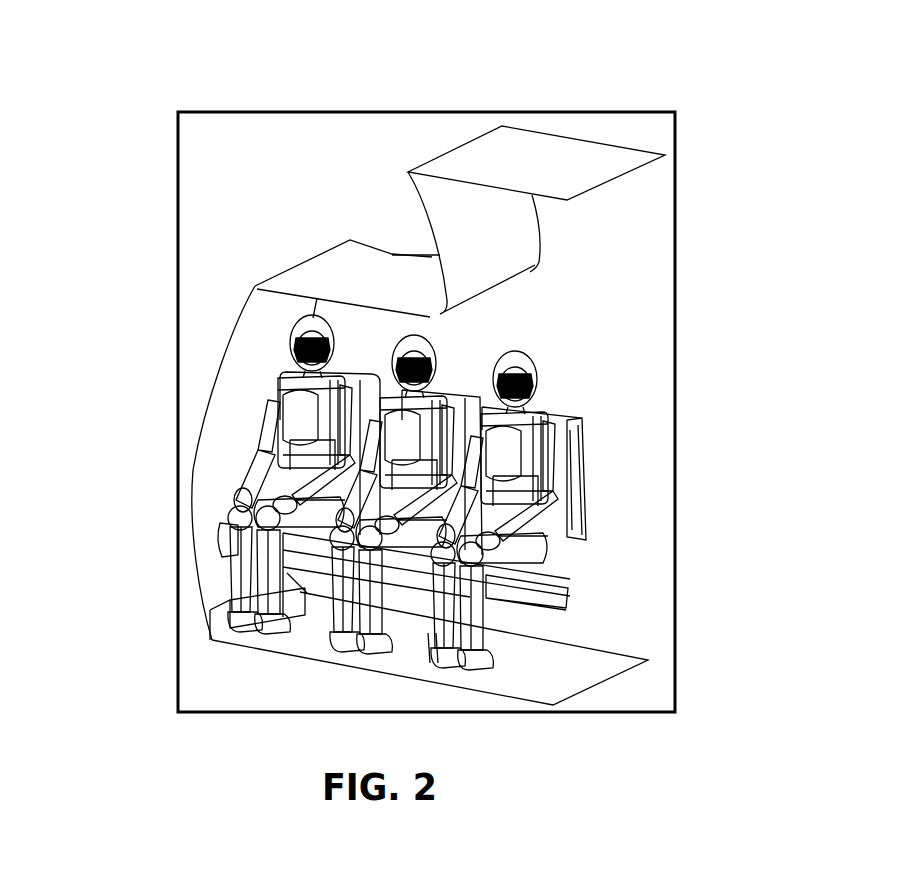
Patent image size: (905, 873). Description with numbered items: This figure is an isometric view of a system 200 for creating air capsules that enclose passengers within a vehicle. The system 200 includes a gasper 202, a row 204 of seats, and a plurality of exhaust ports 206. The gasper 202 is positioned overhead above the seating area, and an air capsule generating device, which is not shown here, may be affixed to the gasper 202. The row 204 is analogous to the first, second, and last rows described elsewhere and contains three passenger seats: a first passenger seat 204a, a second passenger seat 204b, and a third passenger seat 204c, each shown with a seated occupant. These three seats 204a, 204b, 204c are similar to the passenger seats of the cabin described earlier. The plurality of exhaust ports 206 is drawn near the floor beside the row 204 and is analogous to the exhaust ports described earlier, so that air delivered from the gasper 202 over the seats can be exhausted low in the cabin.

The system 200 is at (755, 74).
The gasper 202 is at (418, 272).
The row 204 is at (206, 463).
The first passenger seat 204a is at (278, 400).
The second passenger seat 204b is at (443, 390).
The third passenger seat 204c is at (582, 463).
The plurality of exhaust ports 206 is at (222, 615).